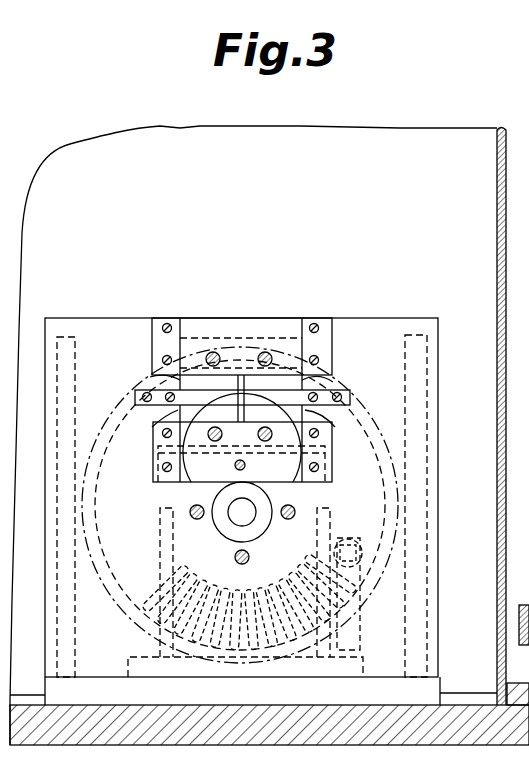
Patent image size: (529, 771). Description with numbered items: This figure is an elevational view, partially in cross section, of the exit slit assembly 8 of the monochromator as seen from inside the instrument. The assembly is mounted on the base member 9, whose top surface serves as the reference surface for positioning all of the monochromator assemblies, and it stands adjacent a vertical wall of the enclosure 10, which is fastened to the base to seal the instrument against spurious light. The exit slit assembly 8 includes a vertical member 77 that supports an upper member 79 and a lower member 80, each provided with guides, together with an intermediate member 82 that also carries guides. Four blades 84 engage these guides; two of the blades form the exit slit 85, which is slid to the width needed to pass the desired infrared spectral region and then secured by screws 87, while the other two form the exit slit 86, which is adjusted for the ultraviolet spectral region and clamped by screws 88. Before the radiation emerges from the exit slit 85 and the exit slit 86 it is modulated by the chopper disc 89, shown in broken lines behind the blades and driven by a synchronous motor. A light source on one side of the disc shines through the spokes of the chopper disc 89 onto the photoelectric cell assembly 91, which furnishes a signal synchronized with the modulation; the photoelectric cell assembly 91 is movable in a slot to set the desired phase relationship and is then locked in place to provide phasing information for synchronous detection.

The exit slit assembly 8 is at (282, 311).
The base member 9 is at (495, 746).
The enclosure 10 is at (507, 456).
The vertical member 77 is at (391, 318).
The member 79 is at (334, 331).
The member 80 is at (332, 468).
The member 82 is at (351, 396).
The blades 84 is at (240, 407).
The exit slit 85 is at (241, 432).
The exit slit 86 is at (240, 438).
The screws 87 is at (211, 352).
The screws 88 is at (217, 442).
The chopper disc 89 is at (110, 592).
The photoelectric cell assembly 91 is at (347, 545).